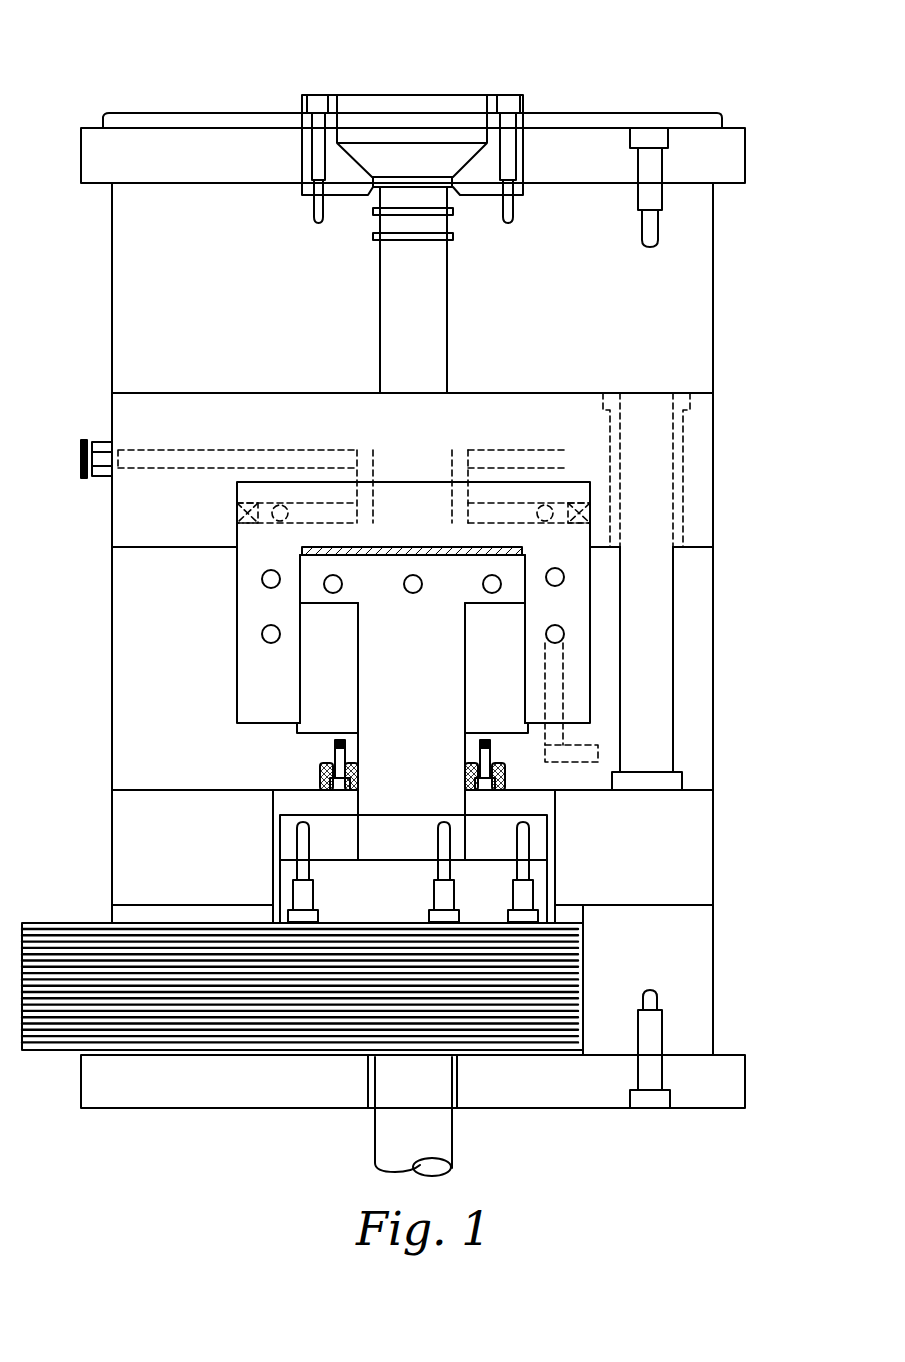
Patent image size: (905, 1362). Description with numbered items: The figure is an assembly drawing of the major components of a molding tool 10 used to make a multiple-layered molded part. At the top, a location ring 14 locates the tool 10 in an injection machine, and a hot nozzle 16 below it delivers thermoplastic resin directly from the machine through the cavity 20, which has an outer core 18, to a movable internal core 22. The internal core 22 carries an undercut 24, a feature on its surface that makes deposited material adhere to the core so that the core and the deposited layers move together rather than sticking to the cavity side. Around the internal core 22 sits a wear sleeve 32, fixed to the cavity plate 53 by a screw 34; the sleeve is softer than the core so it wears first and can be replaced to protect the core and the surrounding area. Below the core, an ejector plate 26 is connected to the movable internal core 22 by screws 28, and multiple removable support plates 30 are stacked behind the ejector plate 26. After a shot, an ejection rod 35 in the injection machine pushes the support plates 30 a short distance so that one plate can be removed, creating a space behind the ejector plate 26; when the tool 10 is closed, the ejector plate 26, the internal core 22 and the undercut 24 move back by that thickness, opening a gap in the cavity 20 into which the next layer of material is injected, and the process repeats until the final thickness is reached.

The molding tool 10 is at (128, 66).
The location ring 14 is at (342, 132).
The hot nozzle 16 is at (430, 290).
The outer core 18 is at (250, 647).
The cavity 20 is at (207, 407).
The movable internal core 22 is at (452, 623).
The undercut 24 is at (318, 563).
The ejector plate 26 is at (485, 885).
The screws 28 is at (445, 843).
The support plates 30 is at (48, 1035).
The wear sleeve 32 is at (320, 778).
The screw 34 is at (338, 760).
The ejection rod 35 is at (425, 1080).
The cavity plate 53 is at (165, 690).